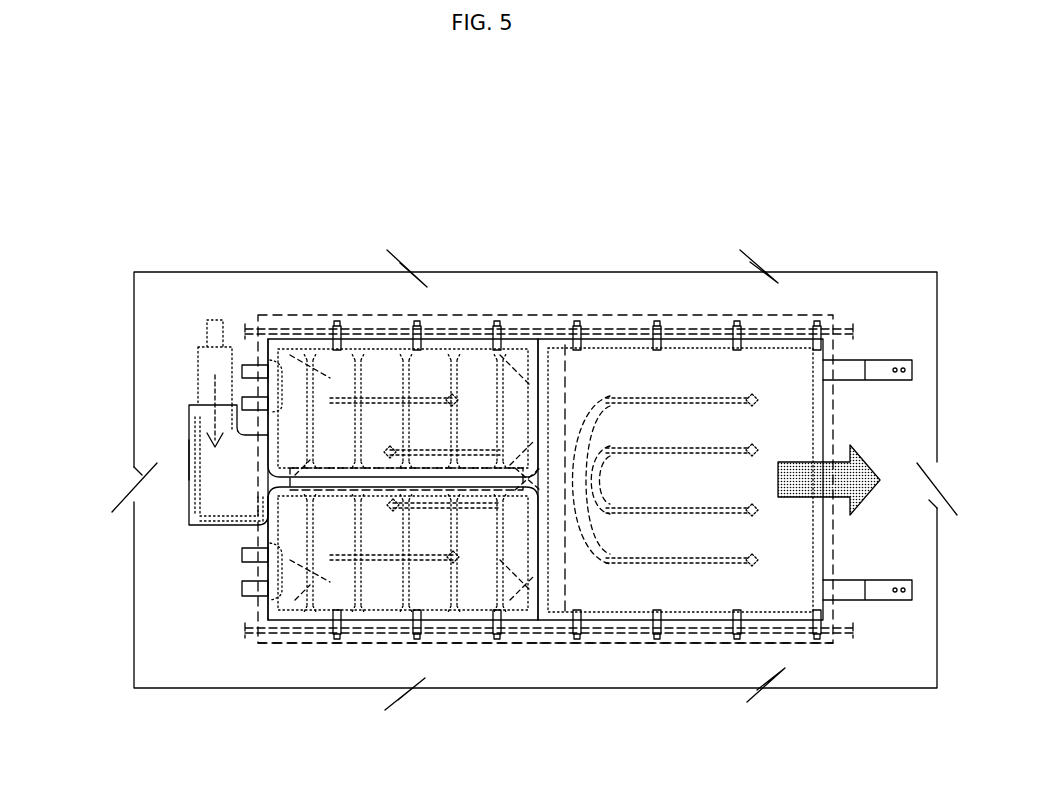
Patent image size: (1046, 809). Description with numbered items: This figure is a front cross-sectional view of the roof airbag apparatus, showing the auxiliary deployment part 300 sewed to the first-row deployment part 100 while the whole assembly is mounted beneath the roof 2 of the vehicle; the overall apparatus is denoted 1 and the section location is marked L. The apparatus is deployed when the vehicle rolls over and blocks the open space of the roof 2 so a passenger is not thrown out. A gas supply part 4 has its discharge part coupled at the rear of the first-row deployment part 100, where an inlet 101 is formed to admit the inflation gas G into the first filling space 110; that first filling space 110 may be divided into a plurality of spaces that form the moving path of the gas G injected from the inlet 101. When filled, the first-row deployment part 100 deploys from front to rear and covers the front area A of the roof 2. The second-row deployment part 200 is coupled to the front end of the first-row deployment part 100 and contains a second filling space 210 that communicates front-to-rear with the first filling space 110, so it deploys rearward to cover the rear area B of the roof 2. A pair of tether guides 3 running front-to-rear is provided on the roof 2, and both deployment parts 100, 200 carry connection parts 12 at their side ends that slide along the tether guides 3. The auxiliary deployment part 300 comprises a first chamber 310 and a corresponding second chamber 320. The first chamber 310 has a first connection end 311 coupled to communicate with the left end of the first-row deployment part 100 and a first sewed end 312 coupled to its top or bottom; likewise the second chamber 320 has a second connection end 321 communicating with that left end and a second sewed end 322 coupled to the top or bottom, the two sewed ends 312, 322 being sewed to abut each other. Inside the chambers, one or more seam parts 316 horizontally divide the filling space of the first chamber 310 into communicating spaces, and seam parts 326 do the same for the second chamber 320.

The fuel cell system 1 is at (825, 278).
The roof 2 is at (565, 313).
The tether guide 3 is at (633, 327).
The gas supply part 4 is at (200, 363).
The connection part 12 is at (735, 325).
The first-row deployment part 100 is at (190, 533).
The inlet 101 is at (190, 460).
The first filling space 110 is at (200, 524).
The second-row deployment part 200 is at (794, 590).
The second filling space 210 is at (628, 586).
The auxiliary deployment part 300 is at (418, 352).
The first chamber 310 is at (295, 578).
The first connection end 311 is at (360, 634).
The first sewed end 312 is at (497, 490).
The seam part 316 is at (416, 636).
The second chamber 320 is at (297, 393).
The second connection end 321 is at (345, 360).
The second sewed end 322 is at (335, 476).
The seam part 326 is at (458, 410).
The front area A is at (318, 645).
The rear area B is at (808, 632).
The joint L is at (528, 484).
The inflation gas G is at (190, 425).